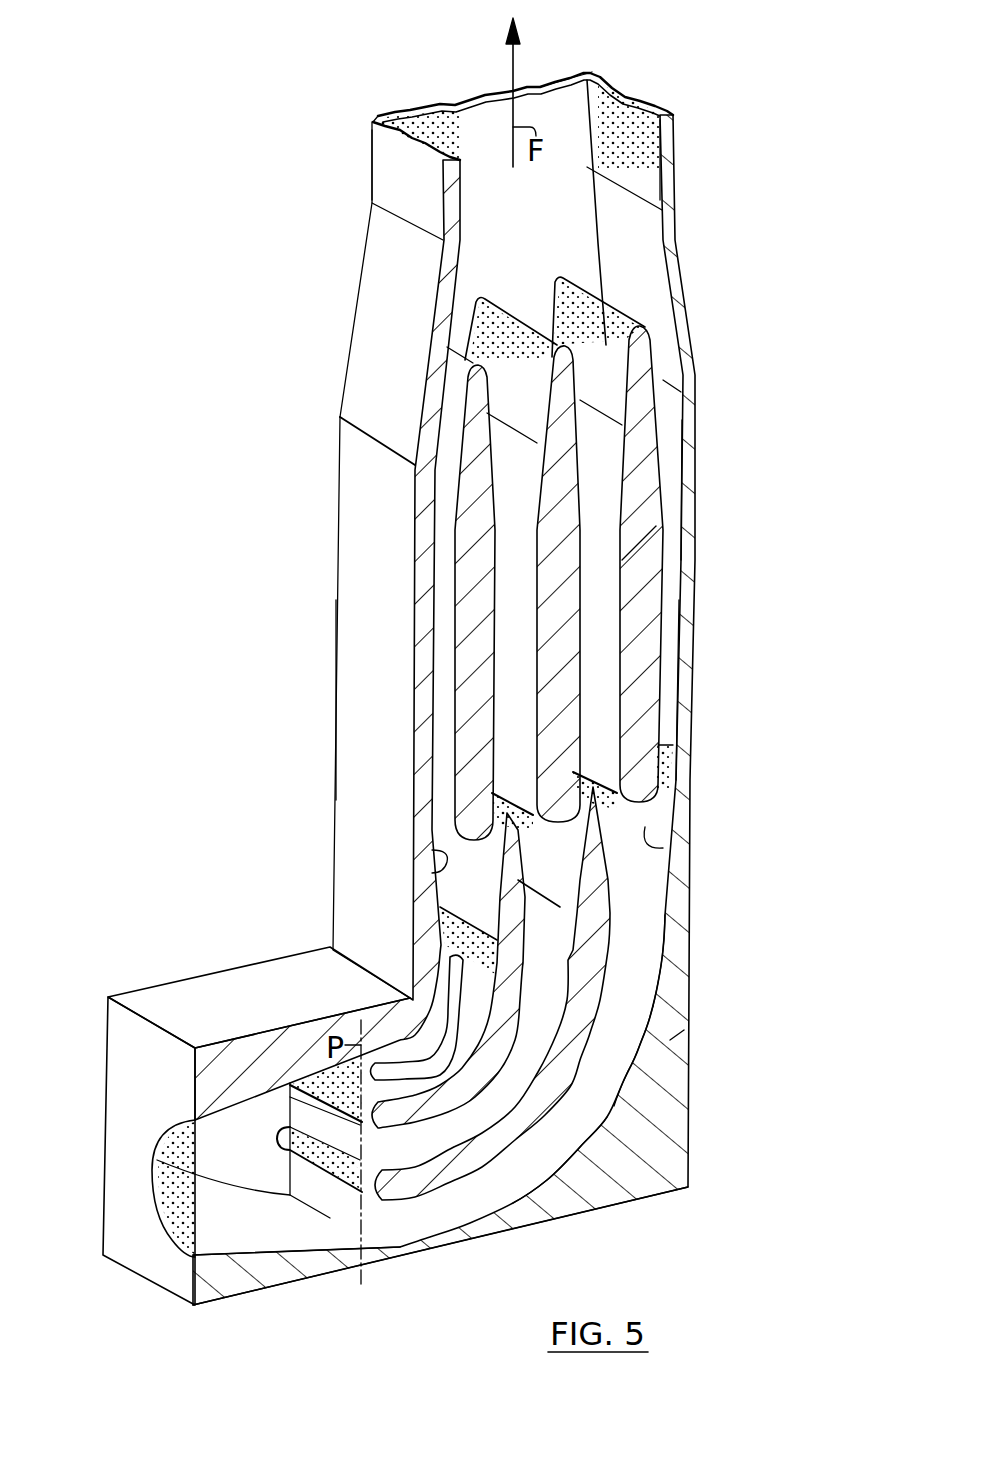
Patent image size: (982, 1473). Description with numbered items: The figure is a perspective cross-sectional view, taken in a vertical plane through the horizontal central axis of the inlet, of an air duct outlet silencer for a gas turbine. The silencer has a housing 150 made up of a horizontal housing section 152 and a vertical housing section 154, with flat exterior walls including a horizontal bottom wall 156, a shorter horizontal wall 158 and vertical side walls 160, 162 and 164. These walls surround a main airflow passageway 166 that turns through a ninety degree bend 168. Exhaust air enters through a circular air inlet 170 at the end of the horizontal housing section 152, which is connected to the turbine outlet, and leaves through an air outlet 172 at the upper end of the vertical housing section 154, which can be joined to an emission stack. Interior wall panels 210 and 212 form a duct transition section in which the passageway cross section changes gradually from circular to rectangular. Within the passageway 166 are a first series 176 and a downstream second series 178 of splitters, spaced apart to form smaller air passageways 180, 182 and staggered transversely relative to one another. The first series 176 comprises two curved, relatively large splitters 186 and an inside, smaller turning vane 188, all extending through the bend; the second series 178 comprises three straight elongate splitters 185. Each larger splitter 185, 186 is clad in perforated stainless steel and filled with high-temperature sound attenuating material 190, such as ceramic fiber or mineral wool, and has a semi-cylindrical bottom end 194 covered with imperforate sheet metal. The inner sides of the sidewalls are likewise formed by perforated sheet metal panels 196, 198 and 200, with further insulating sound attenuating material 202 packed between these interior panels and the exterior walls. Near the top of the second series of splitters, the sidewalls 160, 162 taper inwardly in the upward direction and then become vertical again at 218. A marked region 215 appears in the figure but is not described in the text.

The housing 150 is at (368, 518).
The horizontal housing section 152 is at (295, 1037).
The vertical housing section 154 is at (694, 580).
The horizontal bottom wall 156 is at (567, 1213).
The shorter horizontal wall 158 is at (192, 1005).
The vertical side wall 160 is at (692, 698).
The vertical side wall 162 is at (373, 590).
The vertical side wall 164 is at (478, 127).
The main airflow passageway 166 is at (545, 238).
The bend 168 is at (630, 1013).
The air inlet 170 is at (165, 1187).
The air outlet 172 is at (553, 105).
The first series of splitters 176 is at (578, 1057).
The second series of splitters 178 is at (644, 450).
The smaller air passageway 180 is at (647, 952).
The smaller air passageway 182 is at (667, 655).
The straight elongate splitter 185 is at (658, 392).
The curved splitter 186 is at (537, 1103).
The turning vane 188 is at (450, 997).
The sound attenuating material 190 is at (638, 527).
The semi-cylindrical bottom end 194 is at (670, 800).
The perforated sheet metal panel 196 is at (663, 848).
The perforated sheet metal panel 198 is at (440, 858).
The perforated sheet metal panel 200 is at (578, 188).
The insulating sound attenuating material 202 is at (670, 1052).
The interior wall panel 210 is at (257, 1237).
The interior wall panel 212 is at (215, 1128).
The casing upper face 215 is at (387, 295).
The vertical sidewall portion 218 is at (403, 170).